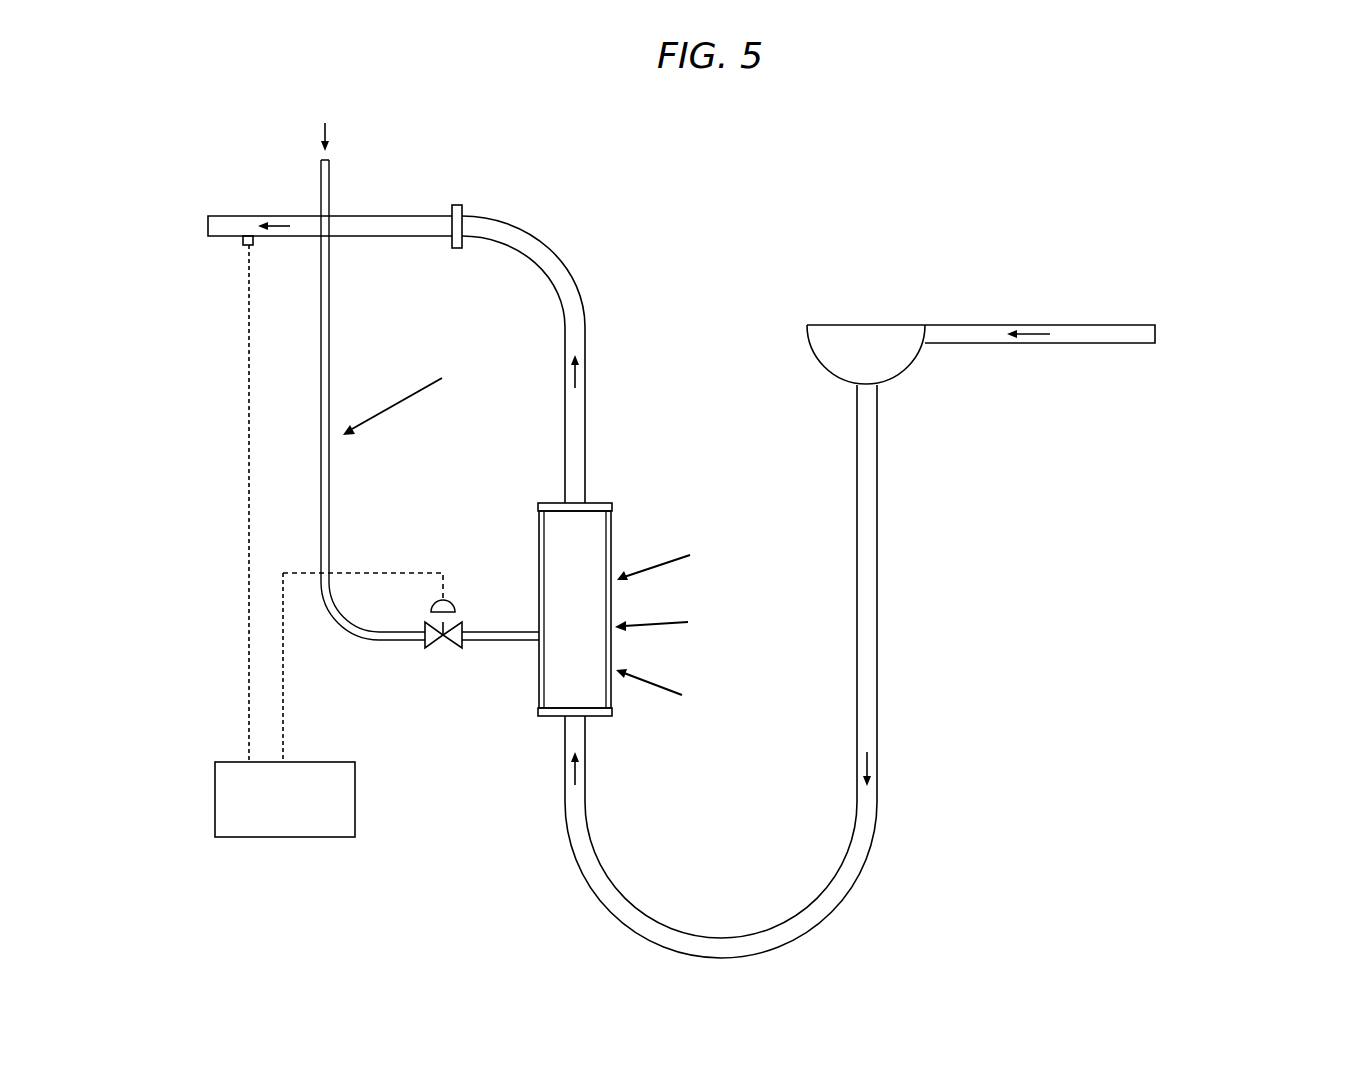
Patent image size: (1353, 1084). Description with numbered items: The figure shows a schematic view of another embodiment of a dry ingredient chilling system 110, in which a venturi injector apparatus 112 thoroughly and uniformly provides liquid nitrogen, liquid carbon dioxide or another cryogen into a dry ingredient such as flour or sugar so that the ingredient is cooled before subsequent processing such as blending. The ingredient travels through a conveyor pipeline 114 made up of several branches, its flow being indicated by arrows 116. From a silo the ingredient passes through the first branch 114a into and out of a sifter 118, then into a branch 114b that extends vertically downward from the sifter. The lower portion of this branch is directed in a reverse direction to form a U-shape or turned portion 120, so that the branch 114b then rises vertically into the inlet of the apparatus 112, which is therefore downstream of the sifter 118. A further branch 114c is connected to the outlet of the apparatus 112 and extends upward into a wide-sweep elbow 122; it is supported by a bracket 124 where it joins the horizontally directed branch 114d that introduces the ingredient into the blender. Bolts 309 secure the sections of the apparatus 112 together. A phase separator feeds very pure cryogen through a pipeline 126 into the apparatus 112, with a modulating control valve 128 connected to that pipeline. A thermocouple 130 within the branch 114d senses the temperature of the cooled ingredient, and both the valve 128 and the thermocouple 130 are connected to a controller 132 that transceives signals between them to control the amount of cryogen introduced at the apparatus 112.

The dry ingredient chilling system 110 is at (762, 238).
The venturi injector apparatus 112 is at (648, 514).
The conveyor pipeline 114 is at (905, 540).
The first branch 114a is at (970, 325).
The branch 114b is at (878, 690).
The branch 114c is at (588, 425).
The branch 114d is at (358, 237).
The arrows 116 is at (278, 219).
The sifter 118 is at (823, 367).
The U-shape or turned portion 120 is at (818, 905).
The wide-sweep elbow 122 is at (538, 240).
The bracket 124 is at (465, 212).
The pipeline 126 is at (332, 172).
The valve 128 is at (450, 600).
The thermocouple 130 is at (245, 245).
The controller 132 is at (283, 838).
The bolts 309 is at (610, 503).